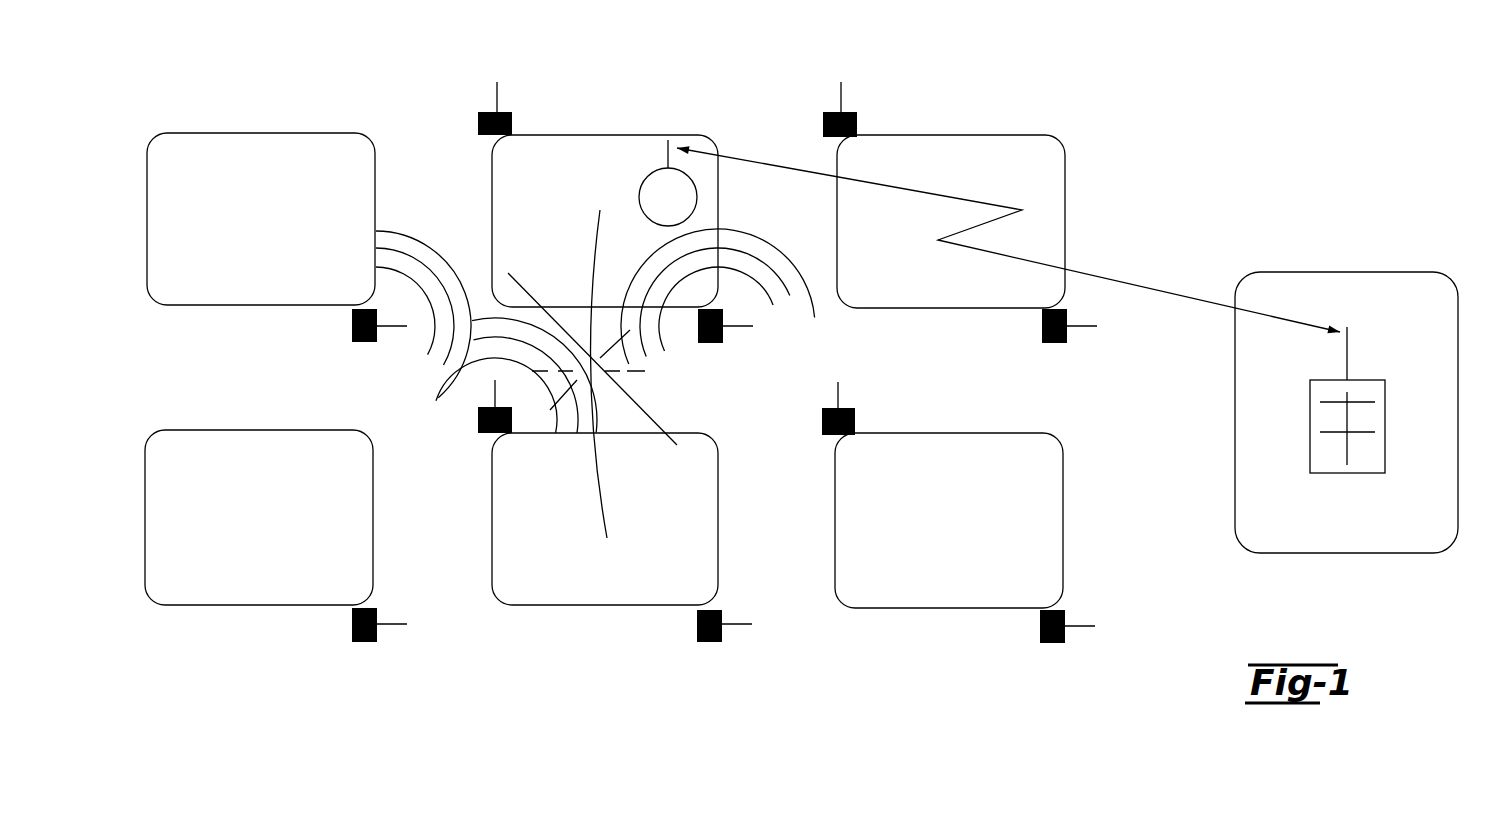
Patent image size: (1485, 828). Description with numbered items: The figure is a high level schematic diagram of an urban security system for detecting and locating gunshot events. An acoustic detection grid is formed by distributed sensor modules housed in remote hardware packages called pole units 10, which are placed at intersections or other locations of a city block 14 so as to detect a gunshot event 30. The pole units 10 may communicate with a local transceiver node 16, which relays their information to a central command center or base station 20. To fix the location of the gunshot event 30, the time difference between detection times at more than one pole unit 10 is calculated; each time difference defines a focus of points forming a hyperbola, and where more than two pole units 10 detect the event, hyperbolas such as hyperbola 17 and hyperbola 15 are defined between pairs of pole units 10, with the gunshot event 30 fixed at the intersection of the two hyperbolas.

The pole unit 10 is at (512, 115).
The city block 14 is at (275, 133).
The hyperbola 15 is at (607, 538).
The local transceiver node 16 is at (640, 193).
The hyperbola 17 is at (515, 275).
The central command center or base station 20 is at (1340, 272).
The gunshot event 30 is at (608, 378).